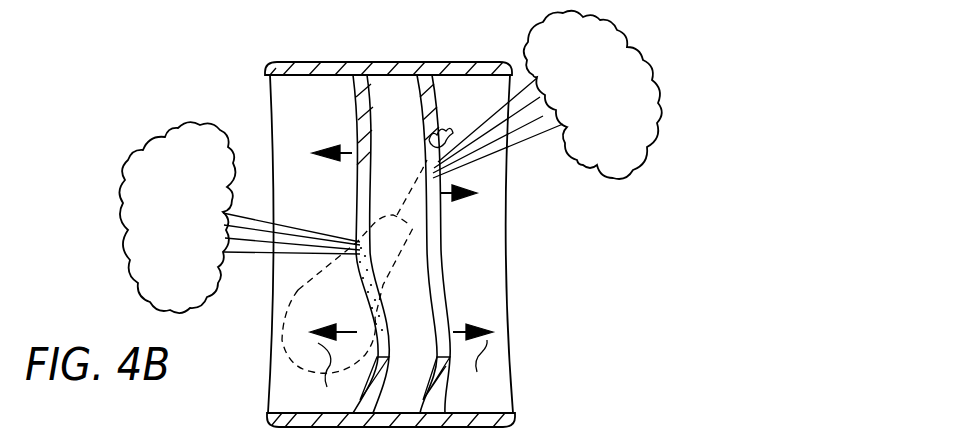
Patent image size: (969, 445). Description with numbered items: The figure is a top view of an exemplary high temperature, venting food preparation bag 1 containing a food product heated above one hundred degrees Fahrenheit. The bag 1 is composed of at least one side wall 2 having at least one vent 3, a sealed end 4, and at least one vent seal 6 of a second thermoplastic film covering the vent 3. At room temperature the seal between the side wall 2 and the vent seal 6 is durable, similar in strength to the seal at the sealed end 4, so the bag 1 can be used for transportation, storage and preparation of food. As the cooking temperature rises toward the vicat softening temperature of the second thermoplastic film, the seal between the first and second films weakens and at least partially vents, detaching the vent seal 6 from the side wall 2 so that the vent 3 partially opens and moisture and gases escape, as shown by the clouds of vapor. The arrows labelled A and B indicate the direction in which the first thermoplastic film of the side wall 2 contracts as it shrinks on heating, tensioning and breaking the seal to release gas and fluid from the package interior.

The food preparation bag 1 is at (557, 341).
The side wall 2 is at (490, 282).
The vent 3 is at (363, 212).
The sealed end 4 is at (400, 70).
The vent seal 6 is at (400, 245).